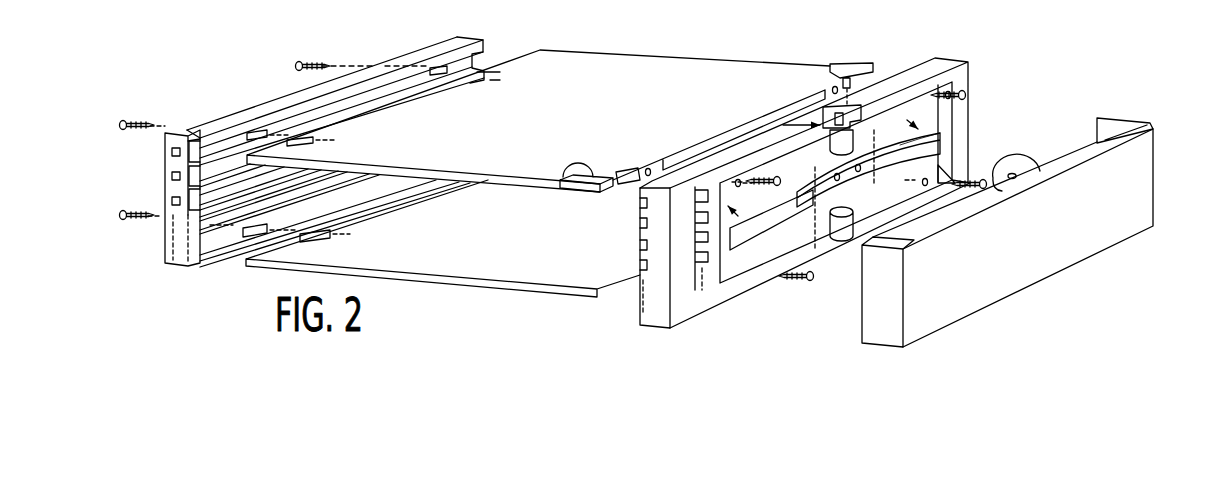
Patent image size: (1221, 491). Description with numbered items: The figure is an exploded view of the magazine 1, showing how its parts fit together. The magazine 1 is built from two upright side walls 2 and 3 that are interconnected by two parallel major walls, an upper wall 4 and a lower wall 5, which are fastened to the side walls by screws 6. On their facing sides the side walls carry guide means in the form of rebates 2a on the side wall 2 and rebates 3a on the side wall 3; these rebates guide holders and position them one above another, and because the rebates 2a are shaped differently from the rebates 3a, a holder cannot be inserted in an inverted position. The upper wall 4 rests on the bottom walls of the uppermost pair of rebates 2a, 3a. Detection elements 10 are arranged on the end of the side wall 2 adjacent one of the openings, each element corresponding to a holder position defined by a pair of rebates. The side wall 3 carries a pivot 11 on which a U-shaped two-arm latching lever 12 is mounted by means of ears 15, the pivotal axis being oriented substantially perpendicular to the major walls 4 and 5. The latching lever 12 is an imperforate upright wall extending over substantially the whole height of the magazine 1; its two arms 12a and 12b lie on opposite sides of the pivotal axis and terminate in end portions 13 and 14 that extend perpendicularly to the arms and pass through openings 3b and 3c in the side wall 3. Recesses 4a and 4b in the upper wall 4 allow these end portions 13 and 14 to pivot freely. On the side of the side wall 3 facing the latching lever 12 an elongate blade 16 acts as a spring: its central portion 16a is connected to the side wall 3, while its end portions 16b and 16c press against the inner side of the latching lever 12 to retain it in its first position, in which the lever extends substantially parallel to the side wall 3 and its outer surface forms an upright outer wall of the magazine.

The magazine 1 is at (712, 52).
The side wall 2 is at (232, 110).
The rebates 2a is at (197, 150).
The side wall 3 is at (935, 63).
The rebates 3a is at (637, 208).
The opening 3b is at (697, 292).
The opening 3c is at (947, 163).
The upper wall 4 is at (550, 58).
The recess 4a is at (575, 171).
The recess 4b is at (833, 62).
The lower wall 5 is at (455, 268).
The screws 6 is at (128, 120).
The detection elements 10 is at (170, 177).
The pivot 11 is at (823, 117).
The latching lever 12 is at (1005, 218).
The arm 12a is at (925, 325).
The arm 12b is at (1141, 228).
The end portion 13 is at (873, 314).
The end portion 14 is at (1108, 127).
The ears 15 is at (1024, 173).
The elongate blade 16 is at (875, 179).
The central portion 16a is at (868, 197).
The end portion 16b is at (745, 238).
The end portion 16c is at (923, 150).